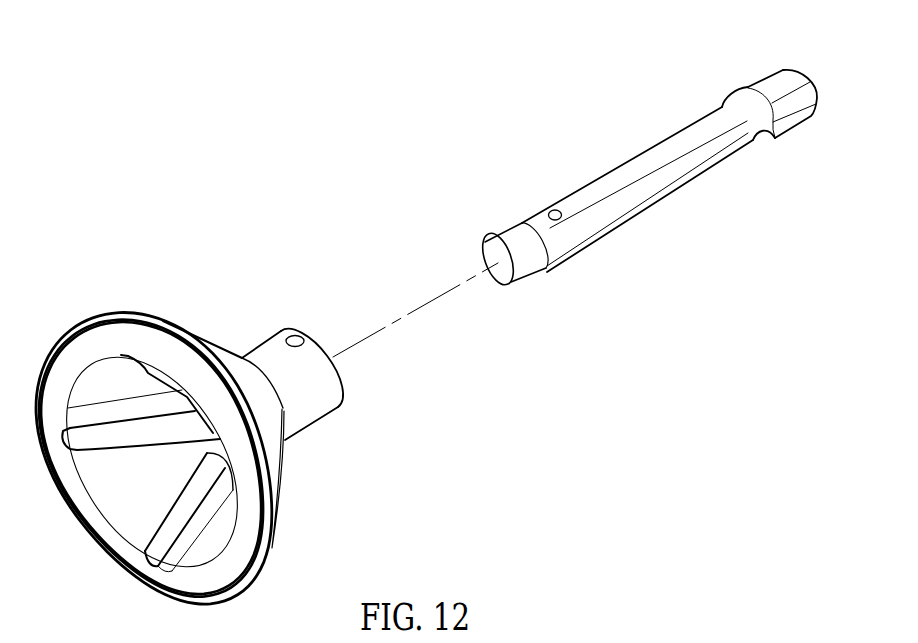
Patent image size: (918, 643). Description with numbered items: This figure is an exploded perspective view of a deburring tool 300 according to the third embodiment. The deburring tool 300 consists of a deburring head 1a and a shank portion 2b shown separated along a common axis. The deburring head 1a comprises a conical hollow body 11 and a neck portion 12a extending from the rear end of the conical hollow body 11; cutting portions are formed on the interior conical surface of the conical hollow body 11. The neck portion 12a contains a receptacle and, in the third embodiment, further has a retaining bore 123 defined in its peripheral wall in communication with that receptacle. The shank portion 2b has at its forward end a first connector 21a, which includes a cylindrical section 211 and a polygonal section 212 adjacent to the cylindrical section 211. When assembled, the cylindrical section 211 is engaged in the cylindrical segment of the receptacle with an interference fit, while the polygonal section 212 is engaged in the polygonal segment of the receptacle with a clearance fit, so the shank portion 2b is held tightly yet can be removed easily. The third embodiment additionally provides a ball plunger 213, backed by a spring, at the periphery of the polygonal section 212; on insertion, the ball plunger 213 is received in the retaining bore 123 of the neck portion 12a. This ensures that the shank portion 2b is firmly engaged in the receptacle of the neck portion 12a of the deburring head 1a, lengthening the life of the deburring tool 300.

The deburring tool 300 is at (750, 29).
The deburring head 1a is at (90, 297).
The conical hollow body 11 is at (213, 353).
The neck portion 12a is at (308, 415).
The retaining bore 123 is at (294, 335).
The shank portion 2b is at (602, 160).
The first connector 21a is at (492, 232).
The cylindrical section 211 is at (528, 258).
The polygonal section 212 is at (560, 245).
The ball plunger 213 is at (553, 209).